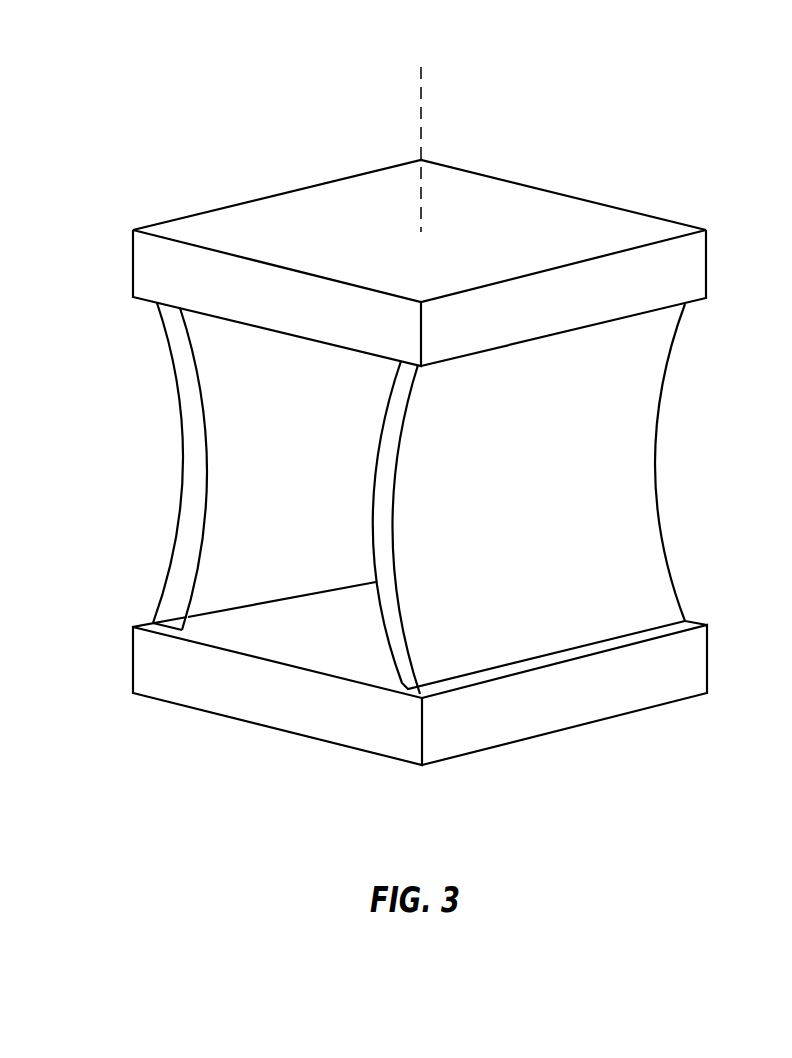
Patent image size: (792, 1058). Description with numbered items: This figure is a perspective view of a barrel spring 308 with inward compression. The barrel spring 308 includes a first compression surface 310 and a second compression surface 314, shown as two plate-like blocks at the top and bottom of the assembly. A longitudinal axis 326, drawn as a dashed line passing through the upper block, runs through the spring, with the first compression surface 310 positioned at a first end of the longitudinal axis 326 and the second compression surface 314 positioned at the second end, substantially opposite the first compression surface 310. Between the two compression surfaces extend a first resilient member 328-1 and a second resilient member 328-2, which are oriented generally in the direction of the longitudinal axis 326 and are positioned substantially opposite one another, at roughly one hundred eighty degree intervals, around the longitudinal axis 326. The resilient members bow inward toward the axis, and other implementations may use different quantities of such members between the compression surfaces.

The barrel spring 308 is at (669, 82).
The first compression surface 310 is at (663, 230).
The second compression surface 314 is at (662, 703).
The longitudinal axis 326 is at (421, 78).
The first resilient member 328-1 is at (643, 432).
The second resilient member 328-2 is at (213, 431).